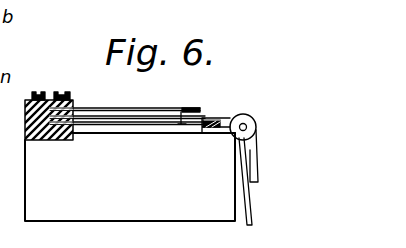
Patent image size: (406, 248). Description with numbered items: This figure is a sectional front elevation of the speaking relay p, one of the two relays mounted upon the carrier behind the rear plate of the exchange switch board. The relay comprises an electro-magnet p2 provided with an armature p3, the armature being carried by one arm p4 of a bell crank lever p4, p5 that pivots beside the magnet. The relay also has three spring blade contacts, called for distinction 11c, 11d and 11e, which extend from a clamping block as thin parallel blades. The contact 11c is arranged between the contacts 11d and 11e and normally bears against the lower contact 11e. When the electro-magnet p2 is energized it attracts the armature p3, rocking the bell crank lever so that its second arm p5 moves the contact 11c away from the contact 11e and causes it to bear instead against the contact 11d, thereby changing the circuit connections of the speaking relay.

The speaking relay p is at (40, 172).
The electro-magnet p2 is at (175, 153).
The armature p3 is at (250, 205).
The arm of bell crank lever p4 is at (257, 170).
The second arm of bell crank lever p5 is at (248, 115).
The relay contact nc is at (201, 105).
The relay contact nd is at (122, 104).
The relay contact ne is at (115, 126).